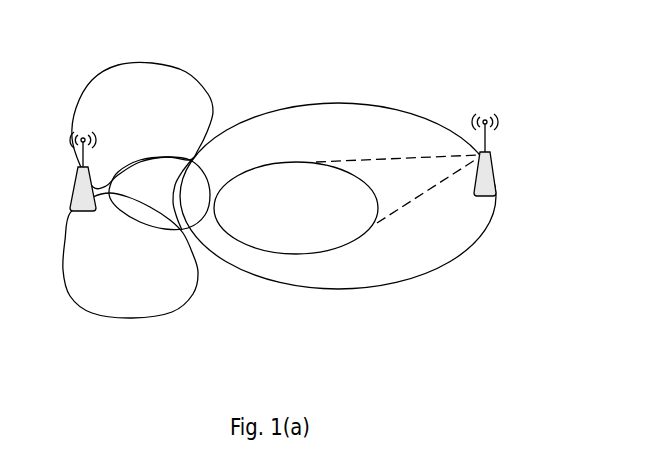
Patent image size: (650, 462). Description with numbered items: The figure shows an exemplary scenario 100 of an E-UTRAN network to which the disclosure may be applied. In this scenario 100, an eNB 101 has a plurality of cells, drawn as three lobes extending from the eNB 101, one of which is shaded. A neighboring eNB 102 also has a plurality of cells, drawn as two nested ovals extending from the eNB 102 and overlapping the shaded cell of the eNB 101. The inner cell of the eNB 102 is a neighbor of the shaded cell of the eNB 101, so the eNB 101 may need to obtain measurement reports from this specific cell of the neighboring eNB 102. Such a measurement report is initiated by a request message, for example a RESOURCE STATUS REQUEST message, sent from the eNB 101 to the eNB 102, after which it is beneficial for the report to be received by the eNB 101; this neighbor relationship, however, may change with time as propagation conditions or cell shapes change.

The exemplary scenario 100 is at (279, 205).
The eNB 101 is at (82, 187).
The neighboring eNB 102 is at (484, 171).